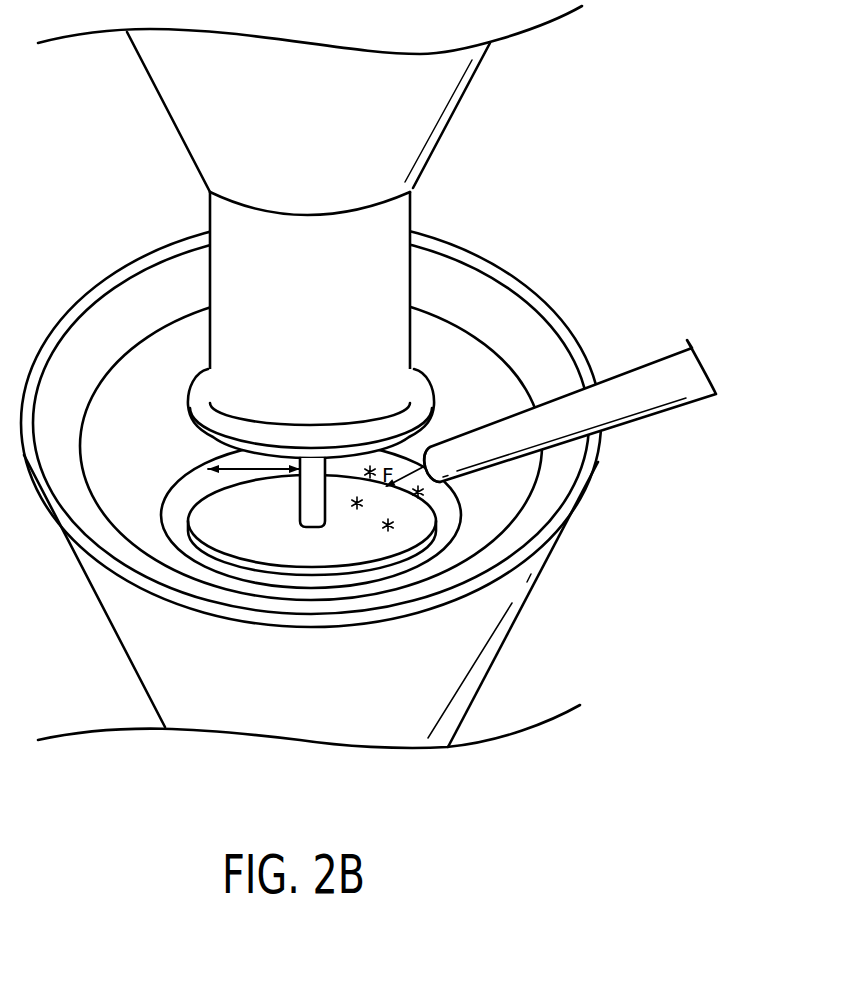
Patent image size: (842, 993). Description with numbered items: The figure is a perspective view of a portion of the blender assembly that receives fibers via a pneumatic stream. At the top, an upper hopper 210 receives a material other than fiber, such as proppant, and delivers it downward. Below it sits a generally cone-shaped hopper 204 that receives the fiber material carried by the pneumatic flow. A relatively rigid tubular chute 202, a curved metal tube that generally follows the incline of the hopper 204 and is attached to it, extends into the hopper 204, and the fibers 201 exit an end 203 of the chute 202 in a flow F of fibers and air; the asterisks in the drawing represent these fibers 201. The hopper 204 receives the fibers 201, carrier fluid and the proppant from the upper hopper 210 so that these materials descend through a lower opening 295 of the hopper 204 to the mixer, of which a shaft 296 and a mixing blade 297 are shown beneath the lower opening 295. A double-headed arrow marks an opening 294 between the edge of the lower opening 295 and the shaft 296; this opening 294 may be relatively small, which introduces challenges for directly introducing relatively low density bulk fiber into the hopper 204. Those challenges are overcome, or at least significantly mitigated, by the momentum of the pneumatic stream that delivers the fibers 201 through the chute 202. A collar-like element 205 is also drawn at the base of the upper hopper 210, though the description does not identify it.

The hopper 210 is at (187, 85).
The hopper 204 is at (513, 278).
The tubular chute 202 is at (653, 366).
The end of the chute 203 is at (430, 446).
The distributor collar 205 is at (210, 438).
The opening 294 is at (187, 485).
The lower opening 295 is at (462, 510).
The shaft 296 is at (305, 500).
The fibers 201 is at (352, 506).
The mixing blade 297 is at (358, 543).